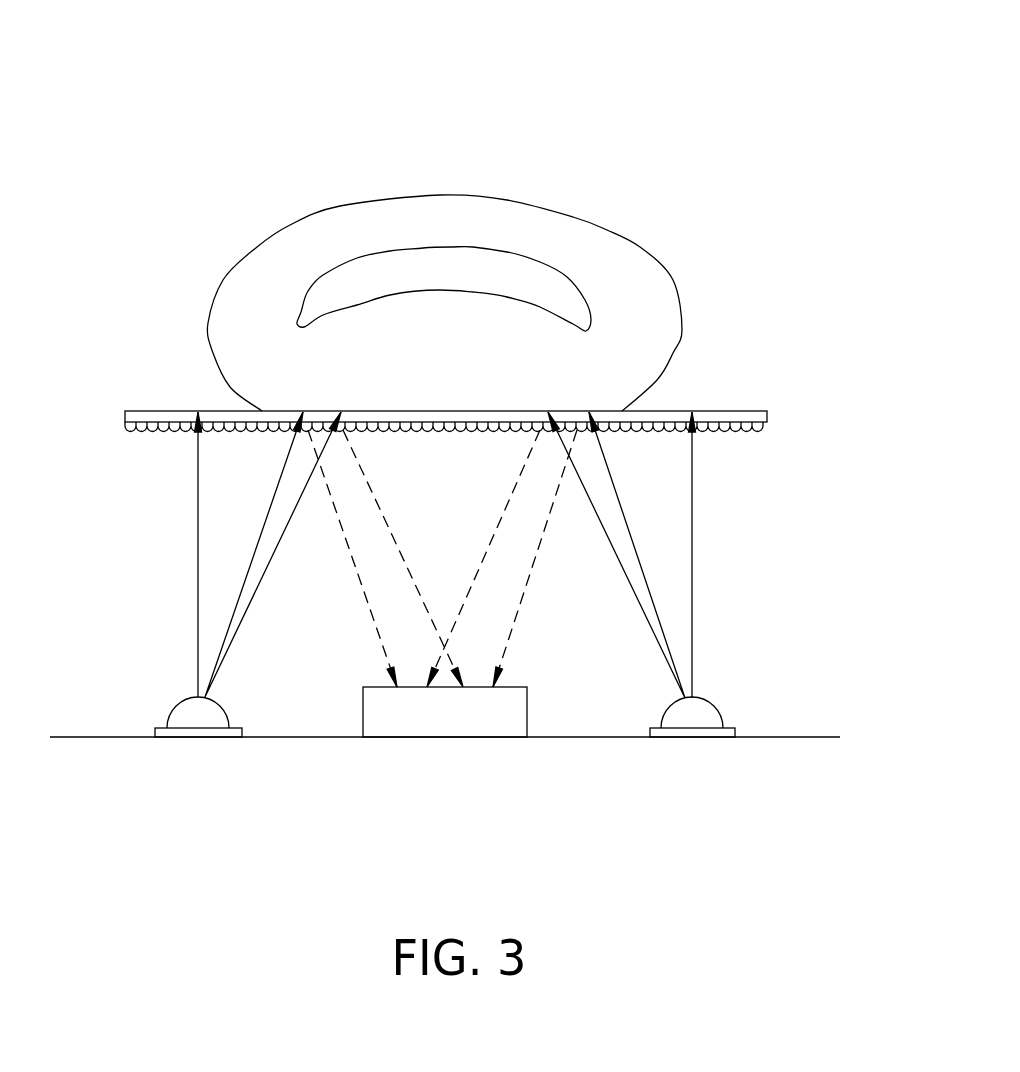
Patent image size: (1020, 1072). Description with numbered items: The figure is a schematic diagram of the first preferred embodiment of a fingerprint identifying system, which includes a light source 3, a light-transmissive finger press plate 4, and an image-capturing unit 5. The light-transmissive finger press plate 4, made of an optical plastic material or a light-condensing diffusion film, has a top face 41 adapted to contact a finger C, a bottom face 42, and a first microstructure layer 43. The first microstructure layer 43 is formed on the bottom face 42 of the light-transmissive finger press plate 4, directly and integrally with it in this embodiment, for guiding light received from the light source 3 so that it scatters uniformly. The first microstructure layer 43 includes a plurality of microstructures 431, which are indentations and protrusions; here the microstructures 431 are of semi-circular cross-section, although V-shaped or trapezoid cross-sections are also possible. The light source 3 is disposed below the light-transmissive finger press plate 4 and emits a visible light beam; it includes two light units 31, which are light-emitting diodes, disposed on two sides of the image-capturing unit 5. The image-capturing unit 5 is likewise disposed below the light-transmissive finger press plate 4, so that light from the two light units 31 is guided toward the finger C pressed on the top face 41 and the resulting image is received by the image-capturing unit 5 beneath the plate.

The finger C is at (607, 228).
The light source 3 is at (420, 781).
The light units 31 is at (180, 713).
The light-transmissive finger press plate 4 is at (480, 499).
The top face 41 is at (742, 411).
The bottom face 42 is at (750, 428).
The first microstructure layer 43 is at (175, 430).
The microstructures 431 is at (705, 432).
The image-capturing unit 5 is at (443, 738).